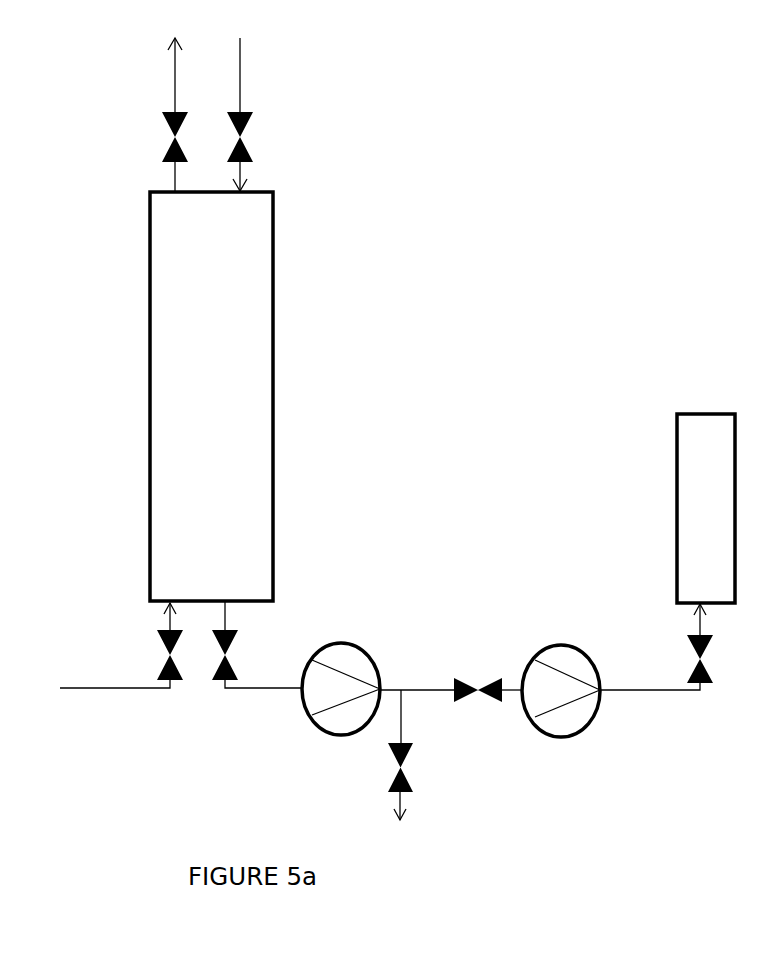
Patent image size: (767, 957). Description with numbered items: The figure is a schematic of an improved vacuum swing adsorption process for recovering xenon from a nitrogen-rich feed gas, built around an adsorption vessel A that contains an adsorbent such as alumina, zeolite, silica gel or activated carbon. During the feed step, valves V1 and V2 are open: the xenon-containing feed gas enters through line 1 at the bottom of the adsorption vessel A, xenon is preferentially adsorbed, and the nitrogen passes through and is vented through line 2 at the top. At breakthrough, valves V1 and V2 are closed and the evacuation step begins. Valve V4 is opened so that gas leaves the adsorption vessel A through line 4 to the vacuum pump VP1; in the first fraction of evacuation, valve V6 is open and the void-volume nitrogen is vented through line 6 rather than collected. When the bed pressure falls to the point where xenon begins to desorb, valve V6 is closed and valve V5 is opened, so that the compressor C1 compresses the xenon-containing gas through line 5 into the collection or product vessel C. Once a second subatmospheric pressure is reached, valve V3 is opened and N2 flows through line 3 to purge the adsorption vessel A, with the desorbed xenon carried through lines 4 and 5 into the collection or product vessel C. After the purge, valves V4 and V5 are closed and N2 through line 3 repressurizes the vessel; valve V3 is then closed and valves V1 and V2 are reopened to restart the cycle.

The adsorption vessel A is at (211, 396).
The collection or product vessel C is at (706, 508).
The nitrogen N2 is at (239, 38).
The line 1 is at (115, 705).
The line 2 is at (151, 75).
The line 3 is at (255, 87).
The line 4 is at (263, 705).
The line 5 is at (650, 715).
The line 6 is at (400, 829).
The valve V1 is at (149, 641).
The valve V2 is at (148, 152).
The valve V3 is at (263, 151).
The valve V4 is at (248, 640).
The valve V5 is at (451, 669).
The valve V6 is at (374, 741).
The vacuum pump VP1 is at (341, 664).
The compressor C1 is at (561, 666).